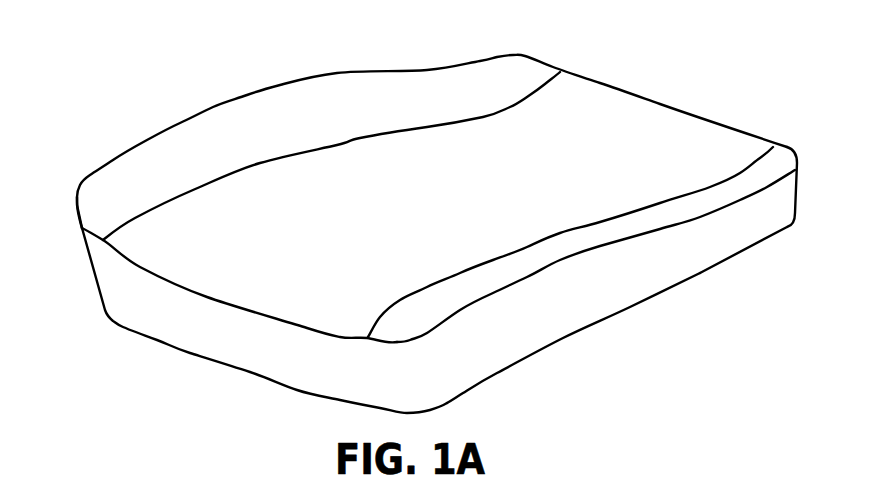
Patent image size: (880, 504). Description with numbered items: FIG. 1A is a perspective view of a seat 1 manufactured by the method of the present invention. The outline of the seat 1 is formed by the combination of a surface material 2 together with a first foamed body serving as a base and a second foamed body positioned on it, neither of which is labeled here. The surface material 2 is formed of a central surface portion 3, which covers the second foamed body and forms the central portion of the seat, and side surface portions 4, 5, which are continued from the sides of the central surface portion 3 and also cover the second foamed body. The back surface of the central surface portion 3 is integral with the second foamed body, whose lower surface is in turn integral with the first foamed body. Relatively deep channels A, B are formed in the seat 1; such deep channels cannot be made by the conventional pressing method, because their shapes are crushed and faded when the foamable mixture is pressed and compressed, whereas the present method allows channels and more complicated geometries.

The seat 1 is at (700, 84).
The surface material 2 is at (317, 317).
The central surface portion 3 is at (228, 280).
The side surface portion 4 is at (530, 340).
The side surface portion 5 is at (85, 243).
The channel A is at (705, 192).
The channel B is at (332, 145).